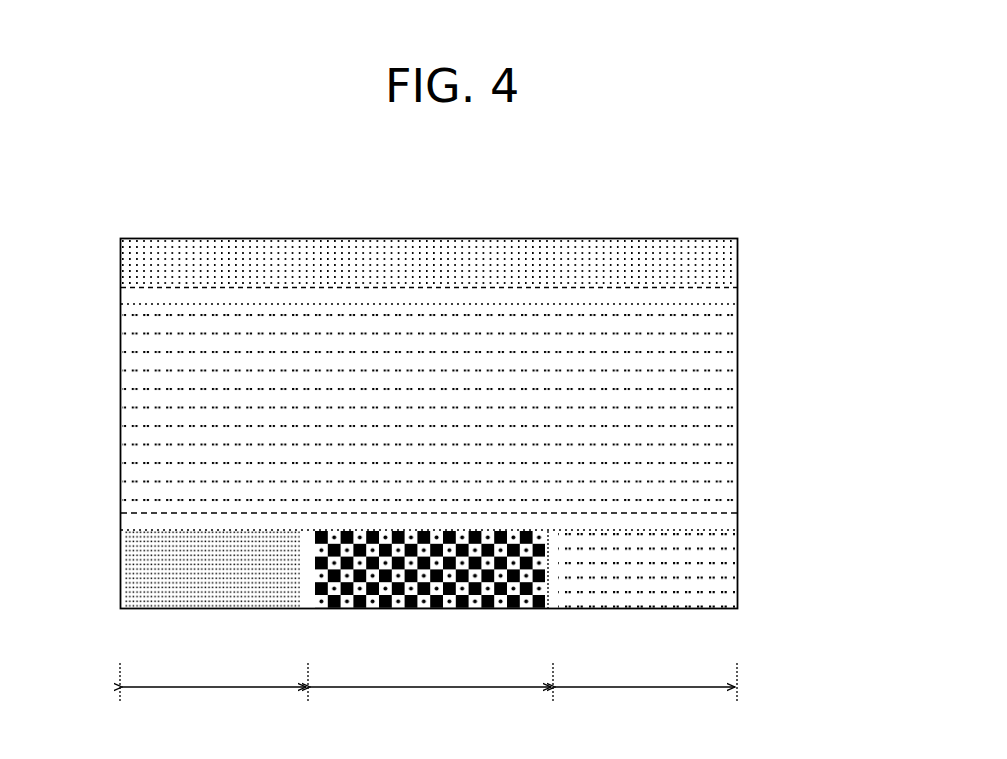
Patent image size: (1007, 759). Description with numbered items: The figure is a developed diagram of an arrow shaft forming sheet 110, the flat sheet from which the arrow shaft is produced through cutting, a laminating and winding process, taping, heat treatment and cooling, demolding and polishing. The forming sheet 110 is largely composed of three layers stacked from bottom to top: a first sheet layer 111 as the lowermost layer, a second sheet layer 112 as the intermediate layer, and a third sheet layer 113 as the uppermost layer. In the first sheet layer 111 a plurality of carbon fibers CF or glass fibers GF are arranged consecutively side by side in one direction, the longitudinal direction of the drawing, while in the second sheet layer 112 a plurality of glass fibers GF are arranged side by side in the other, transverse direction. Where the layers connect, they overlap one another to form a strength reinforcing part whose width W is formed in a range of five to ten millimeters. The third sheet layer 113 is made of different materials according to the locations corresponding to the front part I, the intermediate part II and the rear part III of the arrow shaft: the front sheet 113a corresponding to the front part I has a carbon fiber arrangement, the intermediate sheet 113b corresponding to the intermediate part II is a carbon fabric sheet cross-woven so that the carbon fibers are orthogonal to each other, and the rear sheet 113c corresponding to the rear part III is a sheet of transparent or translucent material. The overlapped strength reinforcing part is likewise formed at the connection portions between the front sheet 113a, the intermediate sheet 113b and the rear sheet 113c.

The arrow shaft forming sheet 110 is at (650, 207).
The first sheet layer 111 is at (747, 270).
The second sheet layer 112 is at (747, 400).
The third sheet layer 113 is at (747, 581).
The front sheet 113a is at (210, 600).
The intermediate sheet 113b is at (430, 602).
The rear sheet 113c is at (648, 600).
The glass fibers GF is at (380, 265).
The carbon fibers CF is at (170, 584).
The width of the strength reinforcing part W is at (245, 193).
The front part I is at (214, 686).
The intermediate part II is at (431, 686).
The rear part III is at (646, 686).